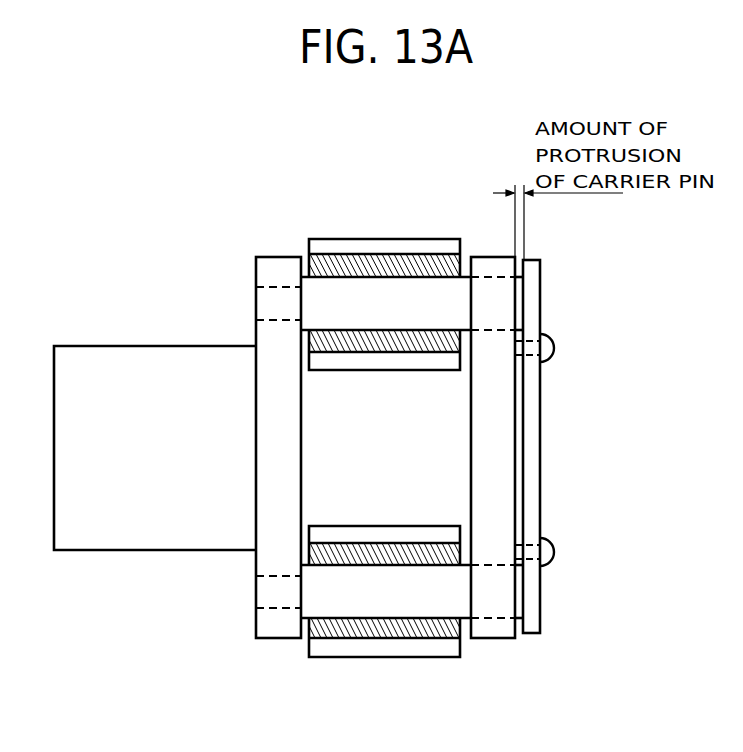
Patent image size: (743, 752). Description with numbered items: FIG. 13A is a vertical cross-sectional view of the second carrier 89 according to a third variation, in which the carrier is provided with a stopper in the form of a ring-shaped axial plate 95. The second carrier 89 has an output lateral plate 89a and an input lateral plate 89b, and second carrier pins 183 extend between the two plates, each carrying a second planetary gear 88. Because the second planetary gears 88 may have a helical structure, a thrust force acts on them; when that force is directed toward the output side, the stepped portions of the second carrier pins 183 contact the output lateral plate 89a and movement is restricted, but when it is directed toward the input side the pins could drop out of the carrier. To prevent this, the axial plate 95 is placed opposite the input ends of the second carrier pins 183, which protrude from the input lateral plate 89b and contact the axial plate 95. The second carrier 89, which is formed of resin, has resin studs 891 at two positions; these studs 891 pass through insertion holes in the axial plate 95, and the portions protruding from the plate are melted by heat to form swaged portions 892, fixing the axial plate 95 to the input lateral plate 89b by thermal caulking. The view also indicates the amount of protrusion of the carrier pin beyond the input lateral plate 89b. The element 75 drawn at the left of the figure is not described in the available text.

The drive motor 75 is at (127, 346).
The second planetary gear 88 is at (415, 243).
The second carrier 89 is at (227, 574).
The output lateral plate 89a is at (255, 273).
The input lateral plate 89b is at (492, 639).
The axial plate 95 is at (533, 288).
The second carrier pin 183 is at (357, 302).
The resin stud 891 is at (517, 350).
The swaged portion 892 is at (552, 346).